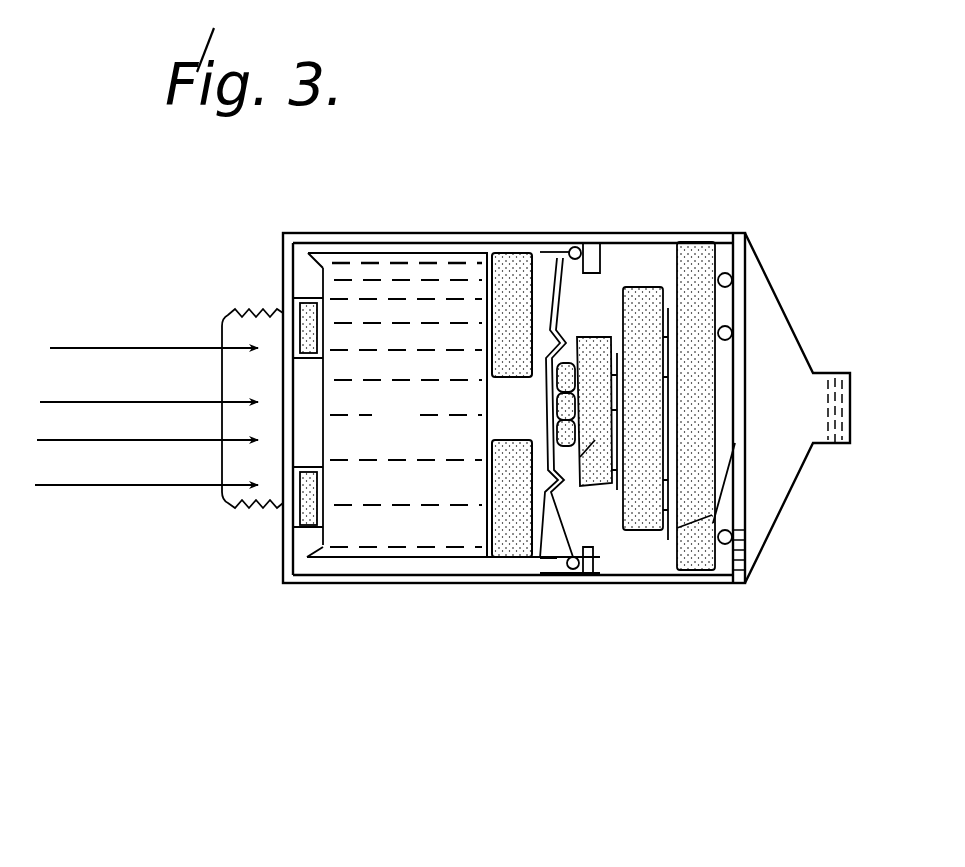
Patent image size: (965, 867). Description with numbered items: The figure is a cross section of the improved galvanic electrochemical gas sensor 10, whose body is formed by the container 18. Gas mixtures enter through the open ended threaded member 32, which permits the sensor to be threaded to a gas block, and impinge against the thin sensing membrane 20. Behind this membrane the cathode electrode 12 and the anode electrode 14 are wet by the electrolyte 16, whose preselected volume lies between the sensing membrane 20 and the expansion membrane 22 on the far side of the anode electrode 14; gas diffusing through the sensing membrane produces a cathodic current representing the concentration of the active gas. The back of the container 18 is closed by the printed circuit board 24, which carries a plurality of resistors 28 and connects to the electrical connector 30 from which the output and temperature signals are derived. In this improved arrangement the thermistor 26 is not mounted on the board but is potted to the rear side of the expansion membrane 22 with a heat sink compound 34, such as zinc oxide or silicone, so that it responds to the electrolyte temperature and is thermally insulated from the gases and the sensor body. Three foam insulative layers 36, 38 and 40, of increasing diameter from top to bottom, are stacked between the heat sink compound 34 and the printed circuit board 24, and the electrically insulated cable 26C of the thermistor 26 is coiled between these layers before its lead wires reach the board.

The gas sensor 10 is at (276, 600).
The cathode electrode 12 is at (305, 428).
The anode electrode 14 is at (512, 540).
The electrolyte 16 is at (430, 508).
The container 18 is at (383, 233).
The sensing membrane 20 is at (285, 385).
The expansion membrane 22 is at (558, 243).
The printed circuit board 24 is at (743, 363).
The thermistor 26 is at (577, 420).
The electrically insulated cable 26C is at (598, 480).
The resistors 28 is at (737, 553).
The electrical connector 30 is at (835, 392).
The threaded member 32 is at (230, 507).
The heat sink compound 34 is at (560, 363).
The top insulative layer 36 is at (556, 477).
The intermediate insulative layer 38 is at (650, 290).
The bottom insulative layer 40 is at (710, 240).